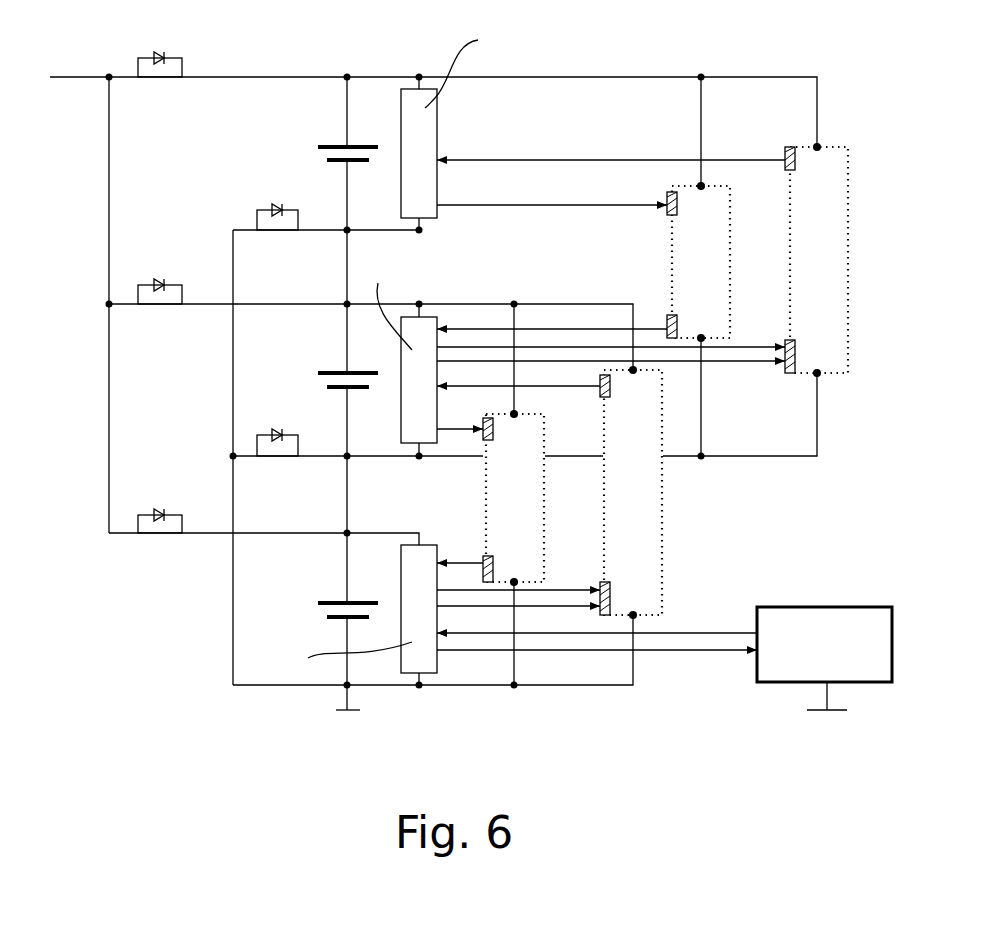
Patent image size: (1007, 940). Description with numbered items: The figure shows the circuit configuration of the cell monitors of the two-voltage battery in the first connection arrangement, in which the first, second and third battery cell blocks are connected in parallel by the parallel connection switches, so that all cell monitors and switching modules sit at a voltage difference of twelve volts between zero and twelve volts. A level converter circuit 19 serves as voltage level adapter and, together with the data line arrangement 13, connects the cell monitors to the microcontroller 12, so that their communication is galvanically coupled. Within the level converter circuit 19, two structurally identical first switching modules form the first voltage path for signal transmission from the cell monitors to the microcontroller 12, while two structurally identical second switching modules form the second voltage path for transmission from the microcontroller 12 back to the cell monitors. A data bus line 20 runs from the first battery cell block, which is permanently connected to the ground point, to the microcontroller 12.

The microcontroller 12 is at (843, 660).
The data line arrangement 13 is at (585, 712).
The level converter circuit 19 is at (890, 141).
The data bus line 20 is at (690, 636).